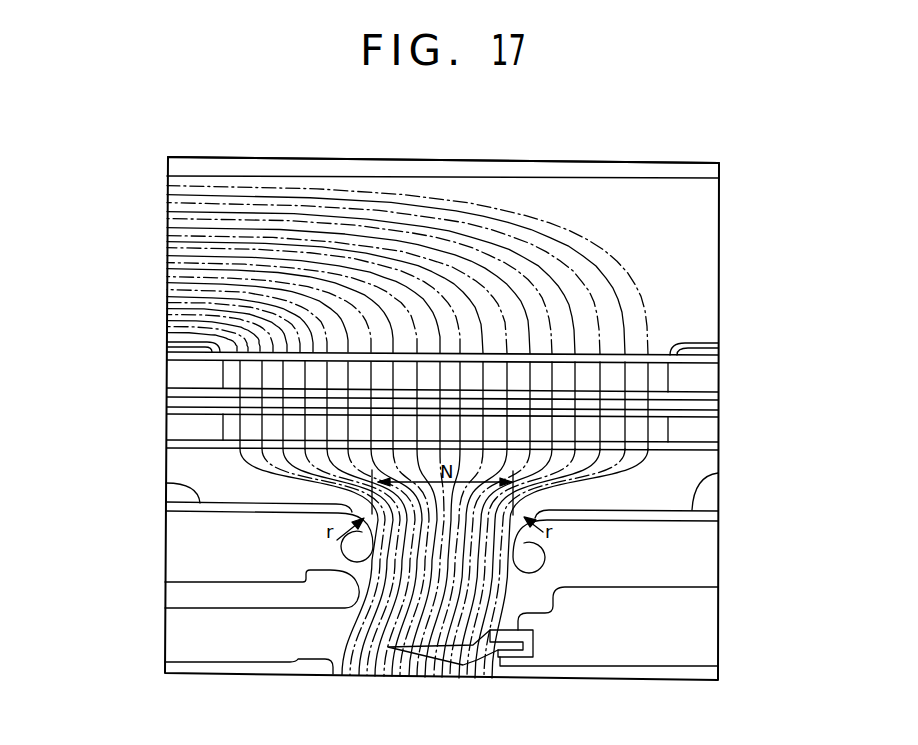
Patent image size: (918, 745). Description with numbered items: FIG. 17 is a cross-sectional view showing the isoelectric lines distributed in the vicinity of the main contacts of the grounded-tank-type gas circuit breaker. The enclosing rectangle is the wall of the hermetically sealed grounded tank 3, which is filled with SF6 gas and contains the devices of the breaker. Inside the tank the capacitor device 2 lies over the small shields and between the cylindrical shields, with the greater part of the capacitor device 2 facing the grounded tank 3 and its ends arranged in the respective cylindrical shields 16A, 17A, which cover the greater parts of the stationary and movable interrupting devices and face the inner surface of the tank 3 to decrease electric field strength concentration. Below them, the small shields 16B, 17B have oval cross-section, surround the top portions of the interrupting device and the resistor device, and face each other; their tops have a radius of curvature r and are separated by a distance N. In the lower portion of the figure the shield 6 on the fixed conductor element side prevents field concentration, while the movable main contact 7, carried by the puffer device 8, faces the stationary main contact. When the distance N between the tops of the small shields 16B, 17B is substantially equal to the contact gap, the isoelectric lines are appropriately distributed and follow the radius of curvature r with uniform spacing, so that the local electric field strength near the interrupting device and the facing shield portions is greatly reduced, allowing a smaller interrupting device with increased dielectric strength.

The grounded tank 3 is at (652, 161).
The capacitor device 2 is at (657, 380).
The cylindrical shield 16A is at (720, 308).
The cylindrical shield 17A is at (190, 343).
The small shield 16B is at (720, 473).
The small shield 17B is at (166, 483).
The puffer device 8 is at (660, 587).
The shield 6 is at (345, 582).
The movable main contact 7 is at (533, 617).